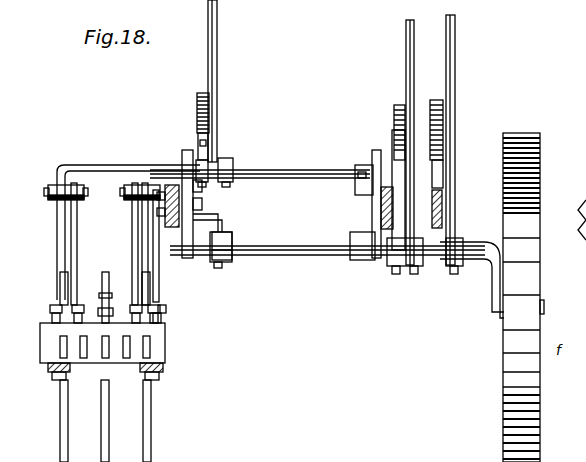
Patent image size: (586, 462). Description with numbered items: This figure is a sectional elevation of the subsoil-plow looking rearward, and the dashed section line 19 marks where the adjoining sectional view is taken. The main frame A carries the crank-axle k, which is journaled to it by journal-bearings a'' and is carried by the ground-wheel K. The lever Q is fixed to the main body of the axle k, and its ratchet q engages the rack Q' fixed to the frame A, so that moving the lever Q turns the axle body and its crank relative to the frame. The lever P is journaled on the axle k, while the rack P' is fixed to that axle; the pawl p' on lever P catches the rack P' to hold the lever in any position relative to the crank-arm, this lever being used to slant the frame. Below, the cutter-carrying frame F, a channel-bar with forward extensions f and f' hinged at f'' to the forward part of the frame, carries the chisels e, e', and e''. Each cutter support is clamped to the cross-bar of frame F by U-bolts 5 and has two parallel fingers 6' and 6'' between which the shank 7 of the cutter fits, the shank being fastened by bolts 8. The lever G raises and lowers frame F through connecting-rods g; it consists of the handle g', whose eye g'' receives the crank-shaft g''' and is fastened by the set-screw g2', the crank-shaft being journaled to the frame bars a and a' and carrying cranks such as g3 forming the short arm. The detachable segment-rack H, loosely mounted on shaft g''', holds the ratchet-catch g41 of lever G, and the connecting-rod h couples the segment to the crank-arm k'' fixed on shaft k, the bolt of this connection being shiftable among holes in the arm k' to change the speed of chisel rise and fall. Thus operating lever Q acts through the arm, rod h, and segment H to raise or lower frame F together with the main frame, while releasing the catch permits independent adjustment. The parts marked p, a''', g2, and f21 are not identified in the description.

The section line 19 is at (264, 392).
The frame A is at (317, 212).
The lever G is at (226, 156).
The handle g' is at (198, 51).
The ratchet-catch g41 is at (200, 95).
The eye g'' is at (234, 120).
The segment-rack H is at (198, 118).
The lever P is at (395, 142).
The rack P' is at (380, 164).
The pawl p' is at (373, 106).
The pinion p is at (416, 149).
The frame bar a is at (377, 158).
The lever Q is at (440, 140).
The rack Q' is at (435, 142).
The ratchet q is at (432, 106).
The arm k' is at (472, 280).
The crank-axle k is at (336, 264).
The crank-arm k'' is at (238, 277).
The ground-wheel K is at (521, 133).
The frame-bar a' is at (177, 226).
The journal-bearings a'' is at (362, 268).
The bracket a''' is at (211, 264).
The connecting-rod h is at (224, 225).
The set-screw g2' is at (233, 197).
The bent rod g2 is at (128, 211).
The crank-shaft g''' is at (120, 145).
The crank g3 is at (144, 168).
The connecting-rods g is at (102, 253).
The shank 7 is at (106, 270).
The finger 6' is at (91, 279).
The finger 6'' is at (120, 279).
The cutter-carrying frame F is at (166, 336).
The bolts 8 is at (167, 309).
The U-bolts 5 is at (162, 320).
The slot f21 is at (110, 352).
The forward extension f is at (64, 380).
The forward extension f' is at (165, 375).
The hinge f'' is at (93, 382).
The chisel e'' is at (74, 421).
The chisel e' is at (115, 421).
The chisel e is at (156, 421).